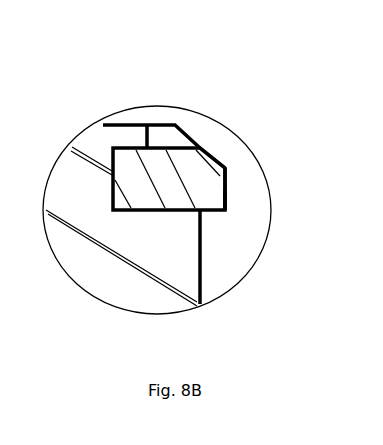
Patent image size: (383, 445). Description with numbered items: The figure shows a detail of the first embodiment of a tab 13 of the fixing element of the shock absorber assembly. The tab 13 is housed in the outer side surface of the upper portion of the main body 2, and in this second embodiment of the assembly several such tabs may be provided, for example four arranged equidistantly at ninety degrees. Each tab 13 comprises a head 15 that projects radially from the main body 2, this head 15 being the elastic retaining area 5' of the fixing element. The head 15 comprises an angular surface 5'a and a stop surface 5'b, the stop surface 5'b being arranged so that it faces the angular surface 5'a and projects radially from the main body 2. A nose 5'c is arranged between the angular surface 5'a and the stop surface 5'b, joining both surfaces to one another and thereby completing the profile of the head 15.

The main body 2 is at (102, 272).
The head 15 is at (205, 175).
The elastic retaining area 5' is at (205, 163).
The angular surface 5'a is at (245, 126).
The nose 5'c is at (272, 183).
The tab 13 is at (242, 197).
The stop surface 5'b is at (257, 257).